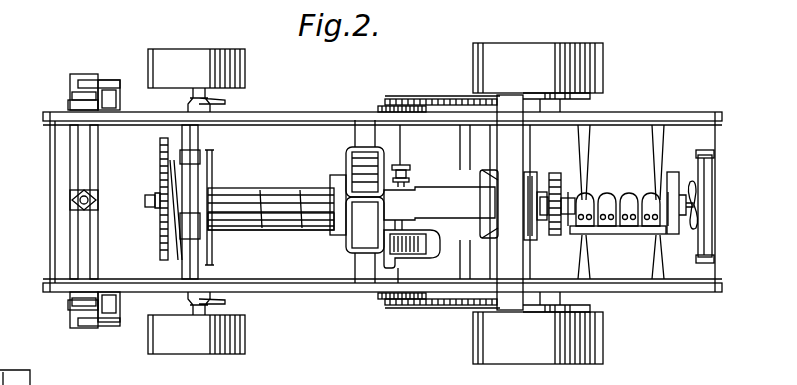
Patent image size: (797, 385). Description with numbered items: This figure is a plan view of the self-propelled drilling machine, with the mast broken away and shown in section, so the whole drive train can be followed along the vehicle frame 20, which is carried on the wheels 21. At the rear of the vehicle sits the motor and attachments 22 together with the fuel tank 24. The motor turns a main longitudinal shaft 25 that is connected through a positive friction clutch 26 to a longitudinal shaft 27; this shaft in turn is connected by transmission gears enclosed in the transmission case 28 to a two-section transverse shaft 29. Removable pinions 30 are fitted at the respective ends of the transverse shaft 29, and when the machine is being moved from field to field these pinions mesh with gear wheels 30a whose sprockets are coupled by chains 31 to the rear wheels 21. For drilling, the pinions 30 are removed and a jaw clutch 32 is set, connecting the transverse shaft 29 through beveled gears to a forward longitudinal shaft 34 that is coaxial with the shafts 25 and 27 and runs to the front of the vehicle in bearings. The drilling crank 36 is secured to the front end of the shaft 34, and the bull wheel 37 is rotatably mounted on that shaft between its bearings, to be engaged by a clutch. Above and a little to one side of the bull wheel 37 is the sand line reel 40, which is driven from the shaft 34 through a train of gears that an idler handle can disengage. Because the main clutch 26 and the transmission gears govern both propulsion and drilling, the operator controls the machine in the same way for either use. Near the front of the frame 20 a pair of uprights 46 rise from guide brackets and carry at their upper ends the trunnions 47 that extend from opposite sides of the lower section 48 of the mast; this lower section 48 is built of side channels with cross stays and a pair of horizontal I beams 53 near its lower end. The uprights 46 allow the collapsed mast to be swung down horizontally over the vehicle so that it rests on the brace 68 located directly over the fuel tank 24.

The vehicle frame 20 is at (272, 113).
The wheels 21 is at (244, 54).
The motor and attachments 22 is at (615, 190).
The fuel tank 24 is at (530, 175).
The main longitudinal shaft 25 is at (590, 190).
The positive friction clutch 26 is at (556, 236).
The longitudinal shaft 27 is at (540, 240).
The transmission case 28 is at (440, 198).
The two-section transverse shaft 29 is at (403, 160).
The removable pinions 30 is at (400, 102).
The gear wheels 30a is at (386, 108).
The chains 31 is at (445, 106).
The jaw clutch 32 is at (422, 262).
The longitudinal shaft 34 is at (182, 262).
The drilling crank 36 is at (160, 222).
The bull wheel 37 is at (276, 190).
The sand line reel 40 is at (278, 230).
The uprights 46 is at (115, 100).
The trunnions 47 is at (75, 86).
The lower section of the mast 48 is at (70, 102).
The horizontal I beams 53 is at (100, 163).
The brace 68 is at (510, 202).